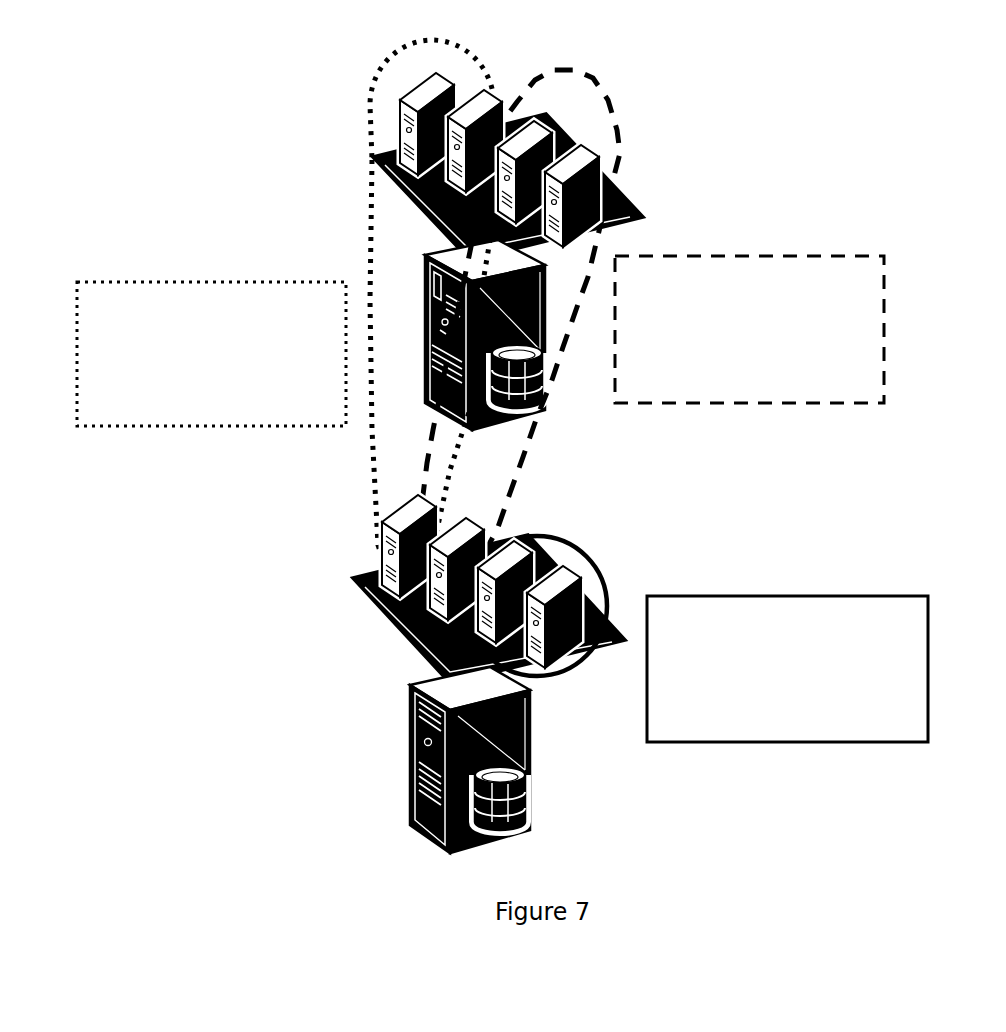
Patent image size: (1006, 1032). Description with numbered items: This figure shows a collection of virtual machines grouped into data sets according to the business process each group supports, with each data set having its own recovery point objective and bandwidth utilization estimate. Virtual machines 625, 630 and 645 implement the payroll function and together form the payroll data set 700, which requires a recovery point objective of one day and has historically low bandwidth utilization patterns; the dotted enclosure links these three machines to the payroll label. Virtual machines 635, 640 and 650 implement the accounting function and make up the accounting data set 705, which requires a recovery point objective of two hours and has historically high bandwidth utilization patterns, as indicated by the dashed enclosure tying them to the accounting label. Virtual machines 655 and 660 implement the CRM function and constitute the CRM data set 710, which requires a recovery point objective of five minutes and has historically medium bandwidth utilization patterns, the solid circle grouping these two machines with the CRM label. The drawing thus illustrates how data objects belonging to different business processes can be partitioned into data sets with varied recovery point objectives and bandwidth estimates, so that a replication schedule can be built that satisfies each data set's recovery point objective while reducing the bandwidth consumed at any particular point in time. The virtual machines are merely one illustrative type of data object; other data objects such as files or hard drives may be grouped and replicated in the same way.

The virtual machine 625 is at (400, 104).
The virtual machine 630 is at (464, 106).
The virtual machine 635 is at (532, 130).
The virtual machine 640 is at (598, 182).
The virtual machine 645 is at (382, 511).
The virtual machine 650 is at (465, 522).
The virtual machine 655 is at (518, 547).
The virtual machine 660 is at (575, 577).
The payroll data set 700 is at (211, 354).
The accounting data set 705 is at (749, 329).
The CRM data set 710 is at (787, 669).